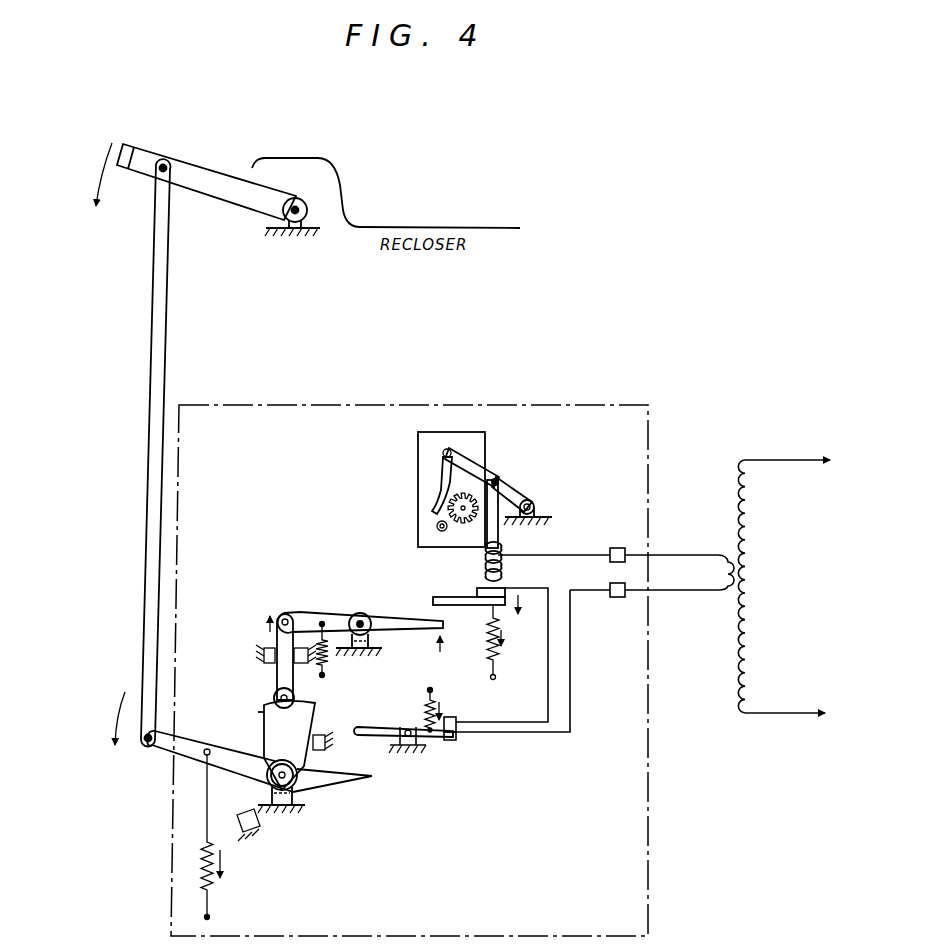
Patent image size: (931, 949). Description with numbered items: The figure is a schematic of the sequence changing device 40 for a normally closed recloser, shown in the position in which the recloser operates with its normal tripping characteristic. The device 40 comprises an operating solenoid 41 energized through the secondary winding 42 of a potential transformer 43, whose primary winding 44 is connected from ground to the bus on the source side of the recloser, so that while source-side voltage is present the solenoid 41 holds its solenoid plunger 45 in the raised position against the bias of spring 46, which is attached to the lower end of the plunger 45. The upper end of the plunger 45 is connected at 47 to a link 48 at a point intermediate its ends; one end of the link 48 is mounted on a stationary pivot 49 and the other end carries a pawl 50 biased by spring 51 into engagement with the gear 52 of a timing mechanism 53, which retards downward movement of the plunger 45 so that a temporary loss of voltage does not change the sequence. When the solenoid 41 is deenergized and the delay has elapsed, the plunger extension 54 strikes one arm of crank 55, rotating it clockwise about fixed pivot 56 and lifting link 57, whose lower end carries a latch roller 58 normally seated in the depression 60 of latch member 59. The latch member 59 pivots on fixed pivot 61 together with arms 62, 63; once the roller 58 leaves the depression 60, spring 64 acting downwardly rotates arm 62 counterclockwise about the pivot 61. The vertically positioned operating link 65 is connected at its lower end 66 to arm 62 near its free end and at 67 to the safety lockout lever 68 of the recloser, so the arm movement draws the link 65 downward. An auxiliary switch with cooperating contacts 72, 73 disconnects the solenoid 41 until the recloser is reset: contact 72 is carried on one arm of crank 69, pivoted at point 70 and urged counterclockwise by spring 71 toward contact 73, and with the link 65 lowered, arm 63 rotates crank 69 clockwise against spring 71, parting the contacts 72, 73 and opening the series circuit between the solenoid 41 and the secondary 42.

The sequence changing device 40 is at (660, 472).
The operating solenoid 41 is at (487, 566).
The secondary winding 42 is at (722, 596).
The potential transformer 43 is at (784, 586).
The primary winding 44 is at (748, 572).
The solenoid plunger 45 is at (499, 547).
The spring 46 is at (488, 640).
The connection point 47 is at (500, 481).
The link 48 is at (528, 496).
The stationary pivot 49 is at (538, 503).
The pawl 50 is at (440, 458).
The spring 51 is at (486, 468).
The gear 52 is at (460, 526).
The timing mechanism 53 is at (417, 500).
The plunger extension 54 is at (474, 606).
The crank 55 is at (412, 616).
The fixed pivot 56 is at (359, 616).
The link 57 is at (294, 690).
The latch roller 58 is at (274, 694).
The latch member 59 is at (316, 716).
The depression 60 is at (262, 713).
The fixed pivot 61 is at (290, 778).
The arm 62 is at (236, 752).
The arm 63 is at (360, 782).
The spring 64 is at (200, 858).
The operating link 65 is at (147, 513).
The lower end 66 is at (147, 745).
The connection point 67 is at (163, 164).
The safety lockout lever 68 is at (198, 162).
The crank 69 is at (365, 727).
The pivot point 70 is at (405, 724).
The spring 71 is at (426, 714).
The auxiliary switch contact 72 is at (458, 737).
The auxiliary switch contact 73 is at (456, 720).